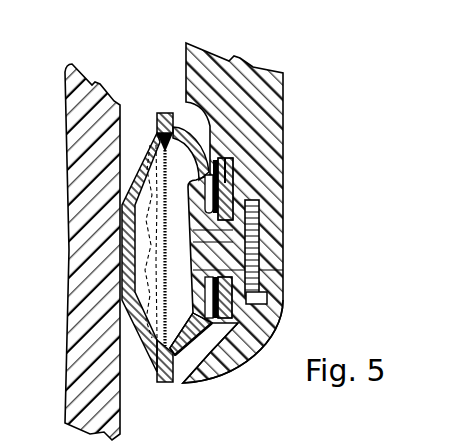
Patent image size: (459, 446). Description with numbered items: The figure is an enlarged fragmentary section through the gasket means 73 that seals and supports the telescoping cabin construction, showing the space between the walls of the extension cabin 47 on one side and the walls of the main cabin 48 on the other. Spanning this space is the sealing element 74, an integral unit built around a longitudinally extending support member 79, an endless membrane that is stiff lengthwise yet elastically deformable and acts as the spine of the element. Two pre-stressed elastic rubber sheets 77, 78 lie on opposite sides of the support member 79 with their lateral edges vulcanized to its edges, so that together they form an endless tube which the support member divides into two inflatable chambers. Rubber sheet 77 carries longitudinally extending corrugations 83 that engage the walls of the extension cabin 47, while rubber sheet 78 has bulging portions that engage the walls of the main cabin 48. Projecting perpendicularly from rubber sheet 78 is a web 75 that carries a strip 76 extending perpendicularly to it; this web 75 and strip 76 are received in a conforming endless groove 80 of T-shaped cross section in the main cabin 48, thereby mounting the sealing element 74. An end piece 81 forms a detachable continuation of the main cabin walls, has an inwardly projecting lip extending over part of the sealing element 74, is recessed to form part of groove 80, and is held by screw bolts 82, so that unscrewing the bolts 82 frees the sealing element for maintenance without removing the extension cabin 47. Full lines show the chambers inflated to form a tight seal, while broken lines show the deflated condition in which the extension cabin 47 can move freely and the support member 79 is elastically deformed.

The extension cabin 47 is at (83, 100).
The main cabin 48 is at (276, 111).
The gasket means 73 is at (167, 107).
The sealing element 74 is at (155, 109).
The web 75 is at (220, 251).
The strip 76 is at (233, 197).
The rubber sheet 77 is at (146, 333).
The rubber sheet 78 is at (178, 358).
The support member 79 is at (168, 210).
The groove 80 is at (222, 172).
The end piece 81 is at (230, 358).
The screw bolts 82 is at (264, 302).
The corrugations 83 is at (118, 273).